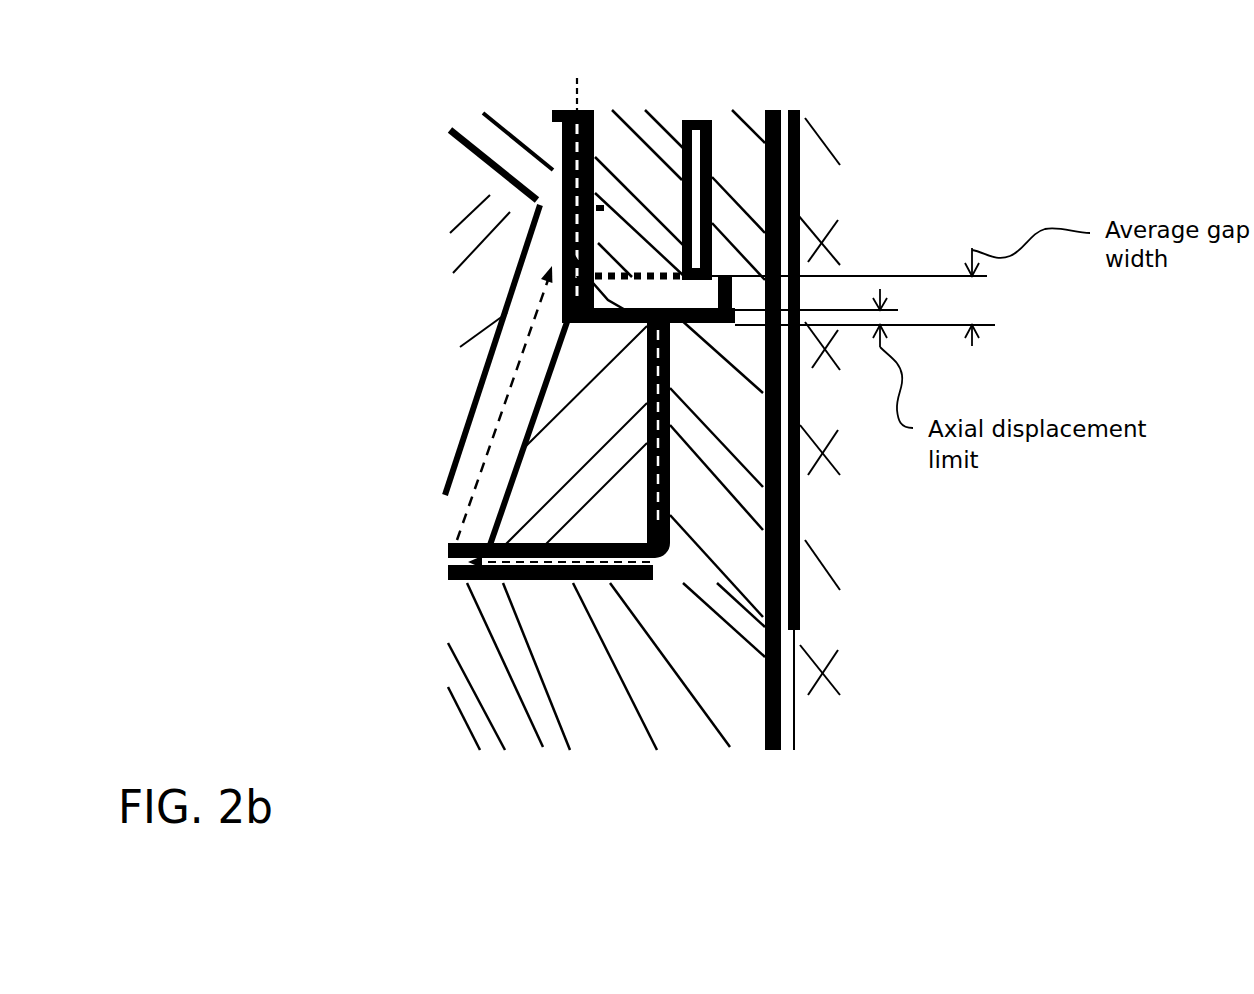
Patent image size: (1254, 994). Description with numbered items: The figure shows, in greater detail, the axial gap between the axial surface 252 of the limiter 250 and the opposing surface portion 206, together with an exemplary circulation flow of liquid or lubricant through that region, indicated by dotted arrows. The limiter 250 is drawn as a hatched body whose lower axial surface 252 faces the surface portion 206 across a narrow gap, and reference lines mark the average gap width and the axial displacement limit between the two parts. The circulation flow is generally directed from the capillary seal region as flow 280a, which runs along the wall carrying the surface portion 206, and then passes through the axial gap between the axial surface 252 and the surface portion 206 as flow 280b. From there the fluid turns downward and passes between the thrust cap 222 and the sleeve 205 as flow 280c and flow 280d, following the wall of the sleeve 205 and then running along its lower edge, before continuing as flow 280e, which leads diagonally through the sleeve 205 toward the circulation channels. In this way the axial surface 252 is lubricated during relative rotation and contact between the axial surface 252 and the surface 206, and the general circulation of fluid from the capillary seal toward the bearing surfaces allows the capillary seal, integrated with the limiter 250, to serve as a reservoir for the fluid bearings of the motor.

The sleeve 205 is at (580, 448).
The opposing surface portion 206 is at (621, 330).
The thrust cap 222 is at (727, 473).
The limiter 250 is at (657, 207).
The axial surface 252 is at (660, 292).
The circulation flow 280a is at (576, 100).
The circulation flow 280b is at (565, 241).
The circulation flow 280c is at (665, 495).
The circulation flow 280d is at (585, 572).
The circulation flow 280e is at (513, 377).